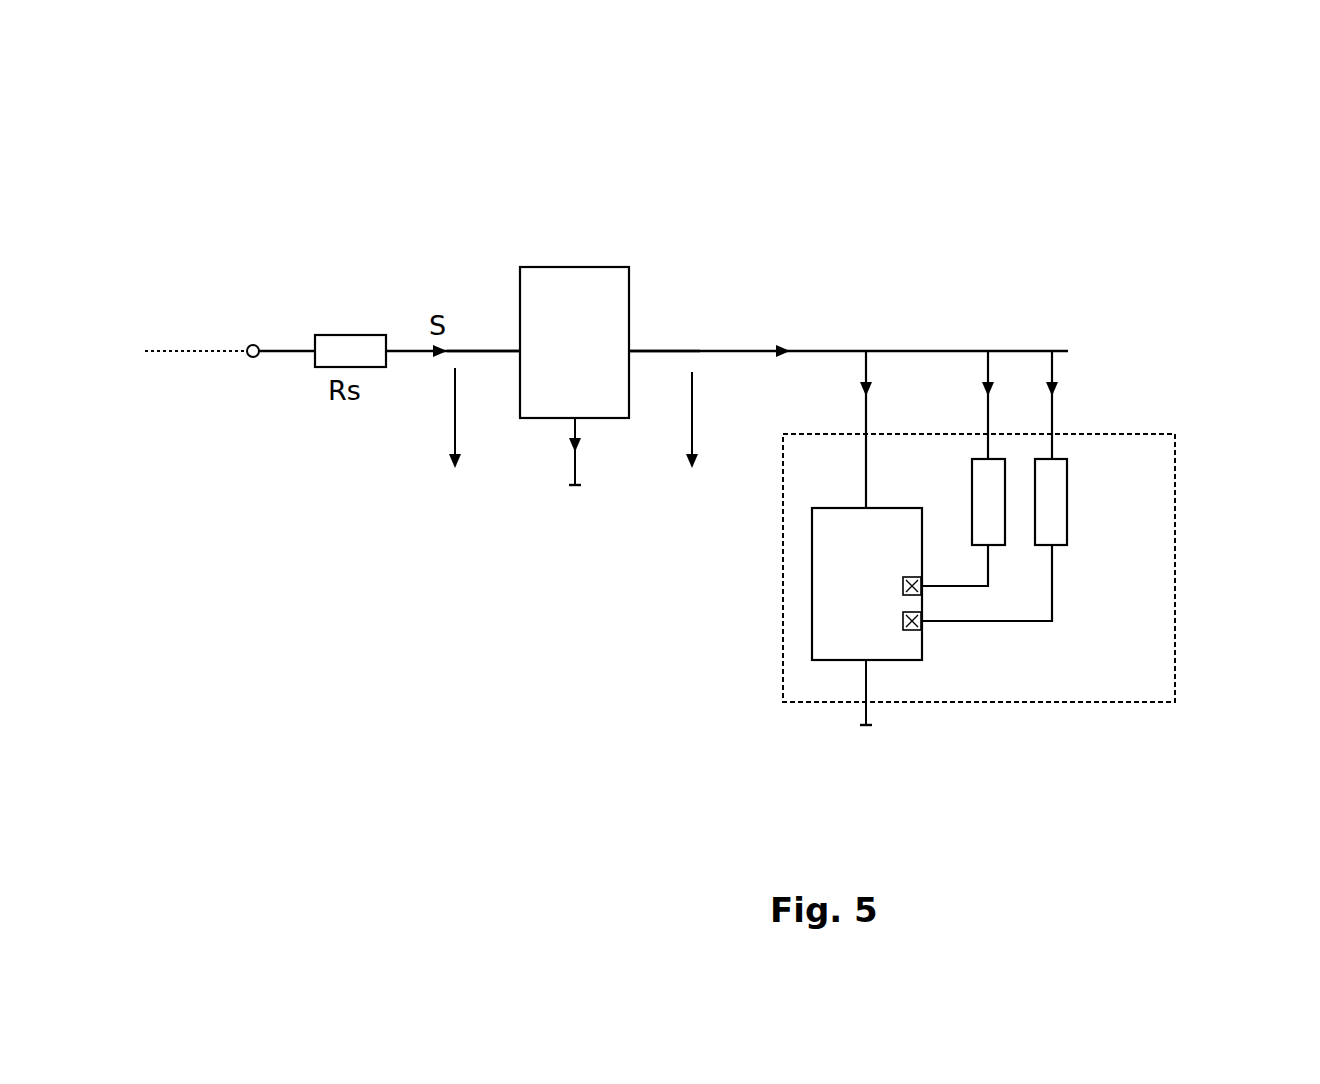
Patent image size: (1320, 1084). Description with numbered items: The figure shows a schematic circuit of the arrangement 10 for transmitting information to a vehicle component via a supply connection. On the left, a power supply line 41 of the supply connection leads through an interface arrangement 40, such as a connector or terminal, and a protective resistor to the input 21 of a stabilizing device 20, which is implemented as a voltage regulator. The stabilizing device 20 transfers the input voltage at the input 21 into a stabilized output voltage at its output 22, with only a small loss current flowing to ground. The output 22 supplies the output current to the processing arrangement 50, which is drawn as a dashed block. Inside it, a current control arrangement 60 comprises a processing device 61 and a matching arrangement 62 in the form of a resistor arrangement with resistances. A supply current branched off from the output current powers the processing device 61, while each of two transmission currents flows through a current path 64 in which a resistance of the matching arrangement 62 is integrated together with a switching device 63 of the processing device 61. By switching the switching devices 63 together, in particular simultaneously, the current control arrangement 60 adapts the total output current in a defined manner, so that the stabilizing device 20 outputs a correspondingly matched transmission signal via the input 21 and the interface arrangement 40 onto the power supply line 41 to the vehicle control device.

The arrangement 10 is at (341, 158).
The stabilizing device 20 is at (560, 267).
The input 21 is at (483, 334).
The output 22 is at (664, 334).
The interface arrangement 40 is at (249, 332).
The power supply line 41 is at (196, 334).
The processing arrangement 50 is at (1175, 445).
The current control arrangement 60 is at (1130, 538).
The processing device 61 is at (822, 661).
The matching arrangement 62 is at (1072, 446).
The switching device 63 is at (903, 585).
The current path 64 is at (987, 602).